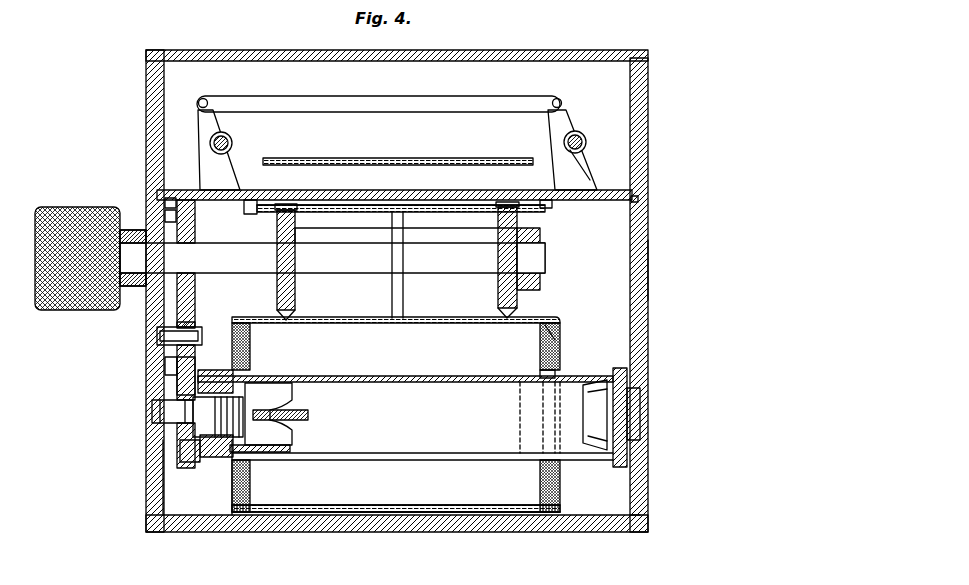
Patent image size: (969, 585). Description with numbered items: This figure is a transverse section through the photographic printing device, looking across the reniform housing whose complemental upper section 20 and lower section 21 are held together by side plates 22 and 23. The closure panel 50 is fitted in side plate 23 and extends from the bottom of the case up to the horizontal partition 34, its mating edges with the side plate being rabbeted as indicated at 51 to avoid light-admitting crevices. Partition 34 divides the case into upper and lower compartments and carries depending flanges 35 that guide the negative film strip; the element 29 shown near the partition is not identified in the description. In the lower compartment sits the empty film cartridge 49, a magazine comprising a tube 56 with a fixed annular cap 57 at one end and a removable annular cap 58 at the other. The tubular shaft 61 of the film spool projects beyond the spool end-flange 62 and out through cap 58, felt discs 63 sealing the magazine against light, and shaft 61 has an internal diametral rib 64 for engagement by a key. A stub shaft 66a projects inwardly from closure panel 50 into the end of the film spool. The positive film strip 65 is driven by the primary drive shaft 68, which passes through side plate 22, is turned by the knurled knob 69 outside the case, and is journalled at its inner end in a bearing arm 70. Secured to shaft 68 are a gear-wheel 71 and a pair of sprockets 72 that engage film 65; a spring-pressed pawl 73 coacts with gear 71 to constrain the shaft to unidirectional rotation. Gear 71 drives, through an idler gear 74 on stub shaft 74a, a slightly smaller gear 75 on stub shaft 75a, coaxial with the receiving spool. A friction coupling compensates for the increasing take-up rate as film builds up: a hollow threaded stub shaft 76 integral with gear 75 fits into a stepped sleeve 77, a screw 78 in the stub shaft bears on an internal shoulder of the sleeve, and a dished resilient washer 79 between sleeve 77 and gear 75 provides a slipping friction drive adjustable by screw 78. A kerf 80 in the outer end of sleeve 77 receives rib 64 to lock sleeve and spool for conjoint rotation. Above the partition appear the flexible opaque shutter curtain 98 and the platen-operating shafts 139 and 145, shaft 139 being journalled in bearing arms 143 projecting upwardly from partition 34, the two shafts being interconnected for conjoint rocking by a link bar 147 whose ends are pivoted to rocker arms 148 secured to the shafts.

The upper section 20 is at (494, 50).
The lower section 21 is at (360, 532).
The side plate 22 is at (146, 75).
The side plate 23 is at (648, 82).
The partition plate 29 is at (445, 197).
The partition member 34 is at (338, 195).
The depending flanges 35 is at (250, 214).
The empty film cartridge 49 is at (560, 325).
The closure panel 50 is at (648, 266).
The rabbeted mating edges 51 is at (642, 200).
The tube 56 is at (437, 514).
The fixed annular cap 57 is at (240, 522).
The removable annular cap 58 is at (560, 500).
The spool shaft 61 is at (413, 375).
The end-flange 62 is at (540, 351).
The felt discs 63 is at (558, 344).
The internal diametral rib 64 is at (308, 414).
The unexposed film 65 is at (402, 196).
The stub shaft 66a is at (610, 408).
The primary drive shaft 68 is at (325, 258).
The knurled manipulating knob 69 is at (62, 215).
The bearing arm 70 is at (541, 240).
The gear-wheel 71 is at (197, 230).
The sprockets 72 is at (277, 292).
The spring-pressed pawl 73 is at (170, 196).
The idler gear 74 is at (192, 324).
The stub shaft 74a is at (197, 337).
The gear 75 is at (178, 377).
The stub shaft 75a is at (165, 410).
The hollow internally threaded stub shaft 76 is at (221, 458).
The sleeve 77 is at (223, 370).
The screw 78 is at (245, 406).
The dished washer 79 is at (196, 462).
The kerf 80 is at (297, 425).
The shutter 98 is at (405, 158).
The shaft 139 is at (564, 142).
The bearing arms 143 is at (580, 174).
The shaft 145 is at (232, 143).
The link bar 147 is at (385, 108).
The rocker arms 148 is at (213, 121).